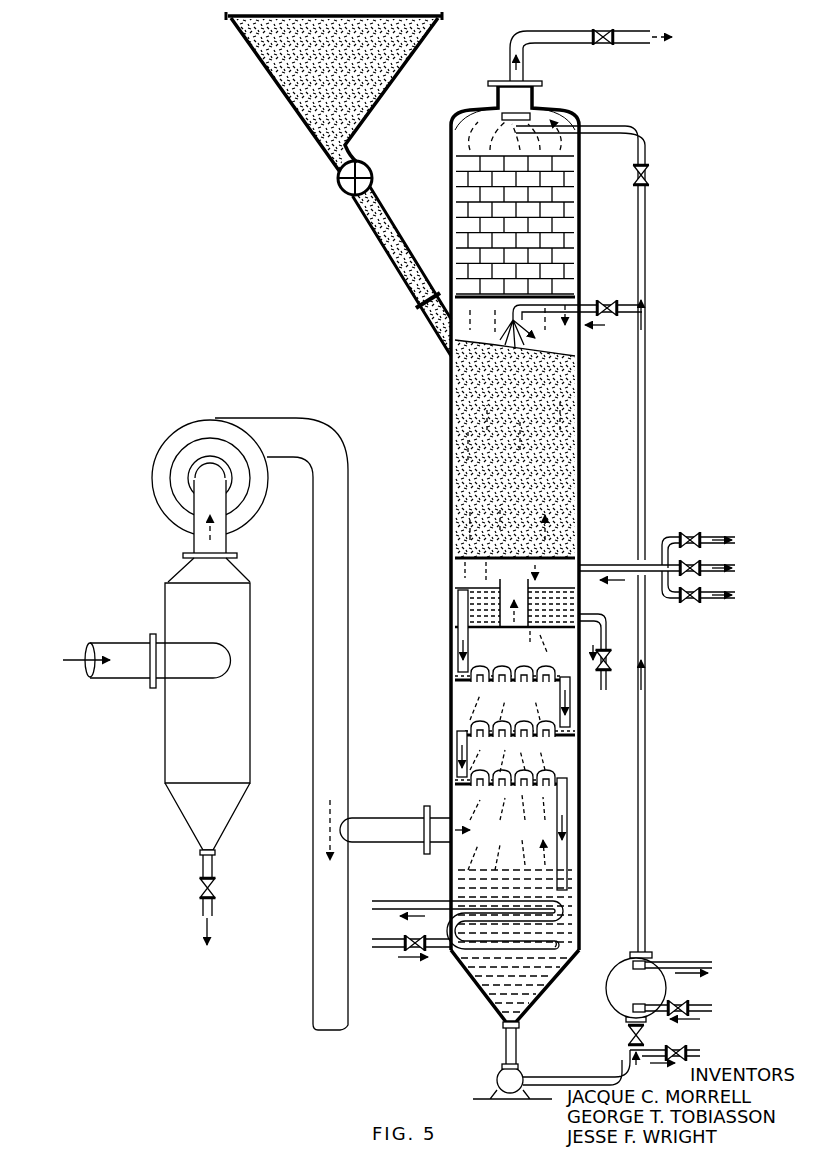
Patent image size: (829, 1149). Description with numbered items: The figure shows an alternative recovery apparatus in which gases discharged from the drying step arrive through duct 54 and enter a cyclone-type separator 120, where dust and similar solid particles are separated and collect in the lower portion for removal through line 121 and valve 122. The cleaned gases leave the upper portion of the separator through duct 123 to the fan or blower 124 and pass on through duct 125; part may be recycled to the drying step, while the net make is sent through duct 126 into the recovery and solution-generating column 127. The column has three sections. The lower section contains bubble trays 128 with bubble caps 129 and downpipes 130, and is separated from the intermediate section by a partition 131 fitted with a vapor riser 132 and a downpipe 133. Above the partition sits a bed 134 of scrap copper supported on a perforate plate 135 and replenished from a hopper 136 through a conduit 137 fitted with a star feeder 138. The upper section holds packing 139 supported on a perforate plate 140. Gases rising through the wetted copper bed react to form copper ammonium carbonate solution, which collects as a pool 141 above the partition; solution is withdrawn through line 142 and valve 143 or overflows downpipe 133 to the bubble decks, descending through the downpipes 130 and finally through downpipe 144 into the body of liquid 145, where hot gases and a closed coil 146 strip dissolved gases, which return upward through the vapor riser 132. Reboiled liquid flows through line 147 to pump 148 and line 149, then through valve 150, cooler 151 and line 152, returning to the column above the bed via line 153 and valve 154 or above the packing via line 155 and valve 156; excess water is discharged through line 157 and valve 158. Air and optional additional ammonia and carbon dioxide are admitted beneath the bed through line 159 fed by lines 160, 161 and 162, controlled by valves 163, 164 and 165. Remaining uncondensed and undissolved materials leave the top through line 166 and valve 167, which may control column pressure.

The duct 54 is at (130, 672).
The separator 120 is at (250, 595).
The line 121 is at (211, 870).
The valve 122 is at (212, 891).
The duct 123 is at (224, 547).
The fan or blower 124 is at (258, 504).
The duct 125 is at (348, 508).
The duct 126 is at (415, 826).
The recovery and solution-generating column 127 is at (450, 419).
The bubble trays 128 is at (462, 682).
The bubble caps 129 is at (478, 722).
The downpipes 130 is at (560, 698).
The partition 131 is at (575, 630).
The vapor riser 132 is at (530, 580).
The downpipe 133 is at (468, 641).
The bed 134 is at (553, 436).
The perforate plate 135 is at (548, 558).
The hopper 136 is at (410, 50).
The conduit 137 is at (392, 220).
The star feeder 138 is at (373, 178).
The packing 139 is at (556, 236).
The perforate plate 140 is at (535, 318).
The pool 141 is at (575, 594).
The line 142 is at (603, 616).
The valve 143 is at (612, 666).
The downpipe 144 is at (557, 813).
The body of liquid 145 is at (458, 884).
The closed coil 146 is at (560, 916).
The line 147 is at (513, 1050).
The pump 148 is at (500, 1072).
The line 149 is at (620, 1076).
The valve 150 is at (628, 1038).
The cooler 151 is at (623, 970).
The line 152 is at (643, 905).
The line 153 is at (628, 312).
The valve 154 is at (604, 303).
The line 155 is at (645, 218).
The valve 156 is at (648, 176).
The line 157 is at (643, 1048).
The valve 158 is at (679, 1045).
The line 159 is at (596, 565).
The line 160 is at (712, 564).
The line 161 is at (712, 536).
The line 162 is at (712, 594).
The valve 163 is at (682, 556).
The valve 164 is at (682, 526).
The valve 165 is at (682, 586).
The line 166 is at (525, 55).
The valve 167 is at (598, 33).